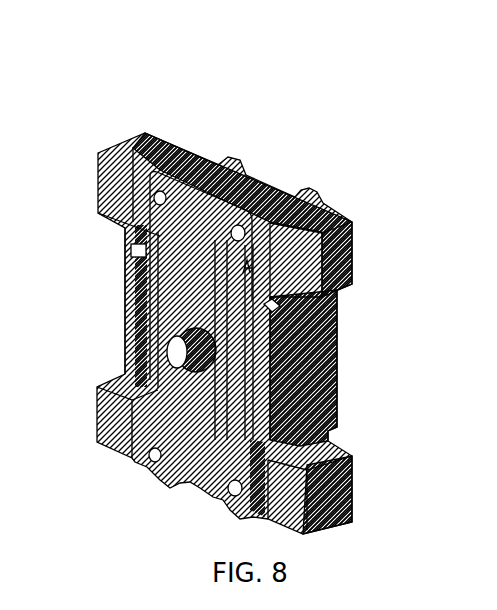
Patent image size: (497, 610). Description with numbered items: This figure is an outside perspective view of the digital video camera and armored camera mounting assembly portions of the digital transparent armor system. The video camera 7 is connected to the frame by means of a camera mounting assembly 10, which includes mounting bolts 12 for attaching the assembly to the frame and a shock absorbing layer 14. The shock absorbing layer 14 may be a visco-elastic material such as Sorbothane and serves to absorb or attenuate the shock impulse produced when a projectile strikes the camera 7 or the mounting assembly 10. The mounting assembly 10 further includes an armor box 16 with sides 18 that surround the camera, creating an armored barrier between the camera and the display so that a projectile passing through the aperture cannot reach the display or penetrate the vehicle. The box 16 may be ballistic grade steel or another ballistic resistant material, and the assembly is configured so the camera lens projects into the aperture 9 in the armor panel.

The camera mounting assembly 10 is at (189, 92).
The mounting bolts 12 is at (237, 163).
The shock absorbing layer 14 is at (322, 224).
The armor box 16 is at (358, 329).
The sides 18 is at (128, 325).
The video camera 7 is at (167, 358).
The apertures 9 is at (220, 346).